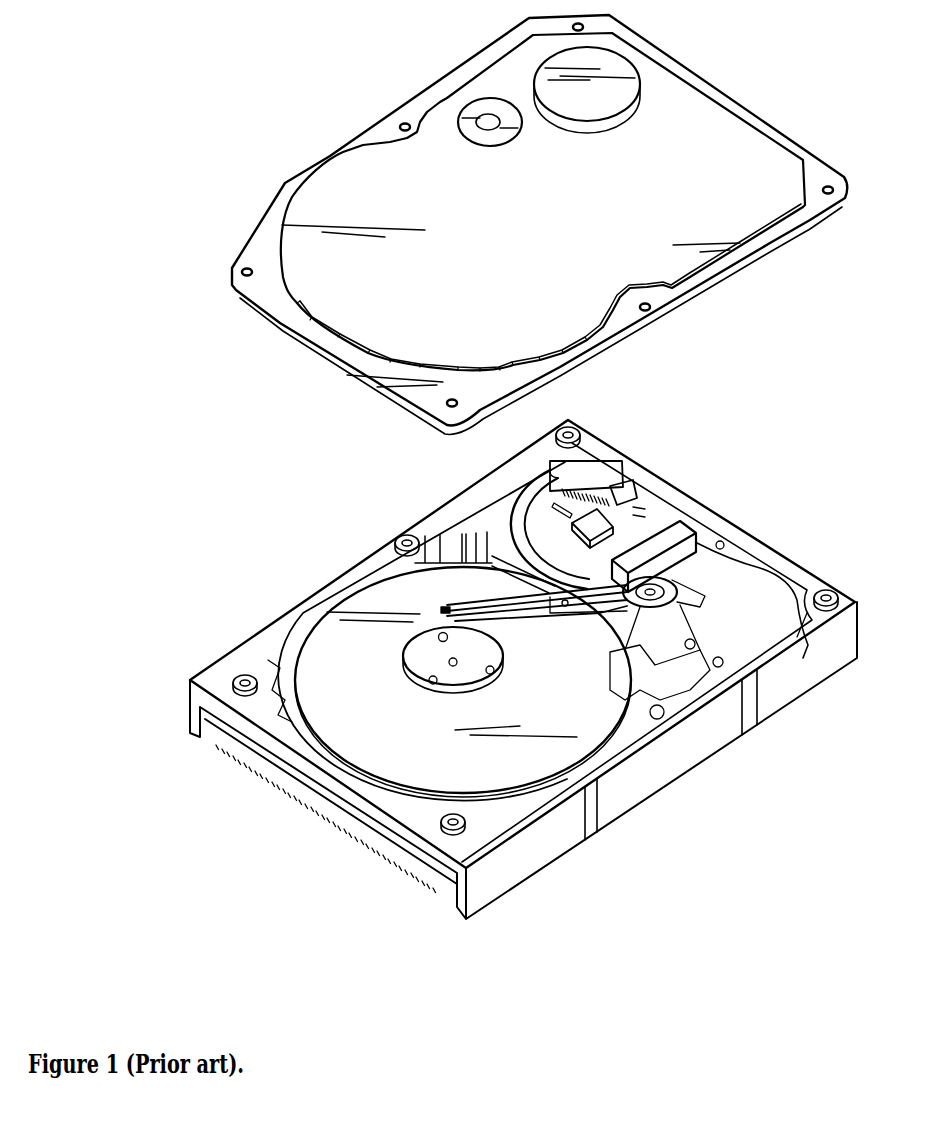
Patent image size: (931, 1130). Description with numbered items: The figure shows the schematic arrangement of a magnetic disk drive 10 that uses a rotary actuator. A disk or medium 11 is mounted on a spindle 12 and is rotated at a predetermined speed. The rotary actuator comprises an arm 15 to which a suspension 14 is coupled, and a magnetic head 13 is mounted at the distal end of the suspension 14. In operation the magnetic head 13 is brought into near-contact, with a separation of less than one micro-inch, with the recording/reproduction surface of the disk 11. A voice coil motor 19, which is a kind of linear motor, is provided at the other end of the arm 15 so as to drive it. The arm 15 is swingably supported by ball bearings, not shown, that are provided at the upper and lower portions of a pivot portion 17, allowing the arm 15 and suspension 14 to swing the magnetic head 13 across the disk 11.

The magnetic disk drive 10 is at (176, 870).
The disk 11 is at (313, 653).
The spindle 12 is at (420, 674).
The magnetic head 13 is at (447, 608).
The suspension 14 is at (524, 620).
The arm 15 is at (580, 612).
The pivot portion 17 is at (697, 540).
The voice coil motor 19 is at (755, 573).